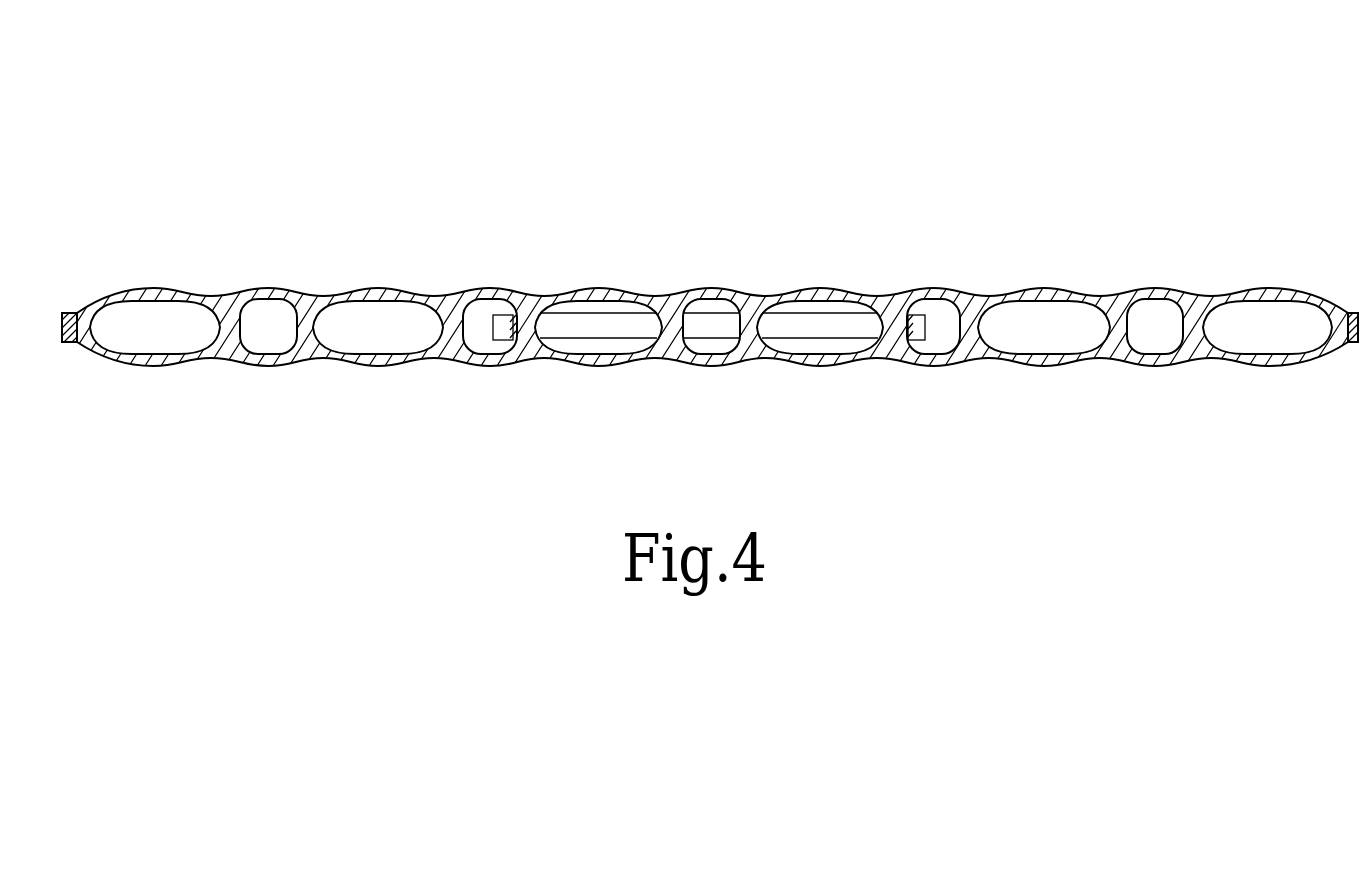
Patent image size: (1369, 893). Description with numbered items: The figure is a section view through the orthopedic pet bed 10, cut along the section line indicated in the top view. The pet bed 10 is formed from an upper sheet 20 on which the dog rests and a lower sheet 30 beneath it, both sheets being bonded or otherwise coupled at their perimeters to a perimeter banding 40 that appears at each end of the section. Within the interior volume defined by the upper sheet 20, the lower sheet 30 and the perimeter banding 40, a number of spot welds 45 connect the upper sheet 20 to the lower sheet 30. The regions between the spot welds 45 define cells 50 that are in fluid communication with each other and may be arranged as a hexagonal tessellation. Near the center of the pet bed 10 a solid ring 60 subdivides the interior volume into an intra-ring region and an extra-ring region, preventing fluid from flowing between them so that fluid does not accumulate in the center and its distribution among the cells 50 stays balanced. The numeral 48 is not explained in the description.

The orthopedic pet bed 10 is at (1107, 193).
The upper sheet 20 is at (115, 297).
The lower sheet 30 is at (187, 350).
The perimeter banding 40 is at (72, 313).
The spot welds 45 is at (221, 325).
The small chamber 48 is at (231, 325).
The cells 50 is at (127, 333).
The solid ring 60 is at (600, 321).